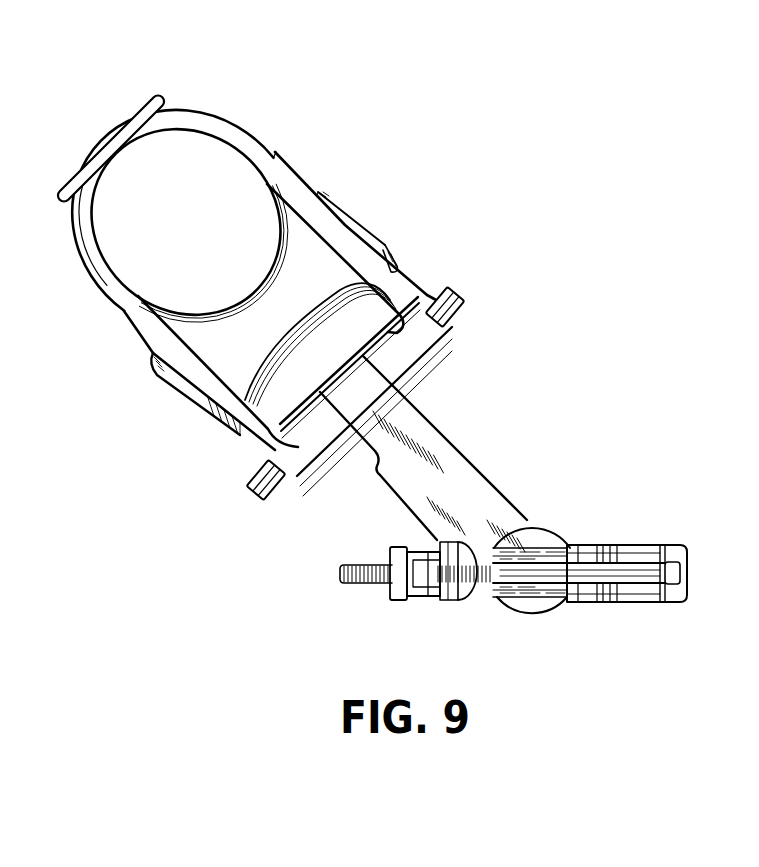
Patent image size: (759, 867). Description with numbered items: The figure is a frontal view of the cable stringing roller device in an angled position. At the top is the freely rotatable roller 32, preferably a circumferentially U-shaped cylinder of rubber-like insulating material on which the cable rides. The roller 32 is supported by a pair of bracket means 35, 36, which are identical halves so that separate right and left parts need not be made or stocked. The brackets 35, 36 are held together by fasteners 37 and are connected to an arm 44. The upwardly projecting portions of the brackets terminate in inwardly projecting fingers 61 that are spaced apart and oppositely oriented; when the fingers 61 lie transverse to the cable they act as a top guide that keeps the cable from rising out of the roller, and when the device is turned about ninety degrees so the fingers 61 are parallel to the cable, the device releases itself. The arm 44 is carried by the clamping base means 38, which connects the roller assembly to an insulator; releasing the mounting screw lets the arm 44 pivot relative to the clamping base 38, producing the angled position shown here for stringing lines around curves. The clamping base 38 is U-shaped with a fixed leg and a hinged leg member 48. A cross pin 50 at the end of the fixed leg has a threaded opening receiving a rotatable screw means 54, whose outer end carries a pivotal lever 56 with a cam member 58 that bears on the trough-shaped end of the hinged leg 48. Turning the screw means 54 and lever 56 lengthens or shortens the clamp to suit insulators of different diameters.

The roller 32 is at (253, 285).
The bracket means 35 is at (190, 395).
The bracket means 36 is at (363, 215).
The fasteners 37 is at (463, 298).
The clamping base means 38 is at (616, 533).
The arm 44 is at (453, 472).
The hinged leg member 48 is at (570, 592).
The cross pin 50 is at (416, 602).
The screw means 54 is at (340, 575).
The pivotal lever 56 is at (686, 560).
The cam member 58 is at (633, 592).
The fingers 61 is at (161, 97).